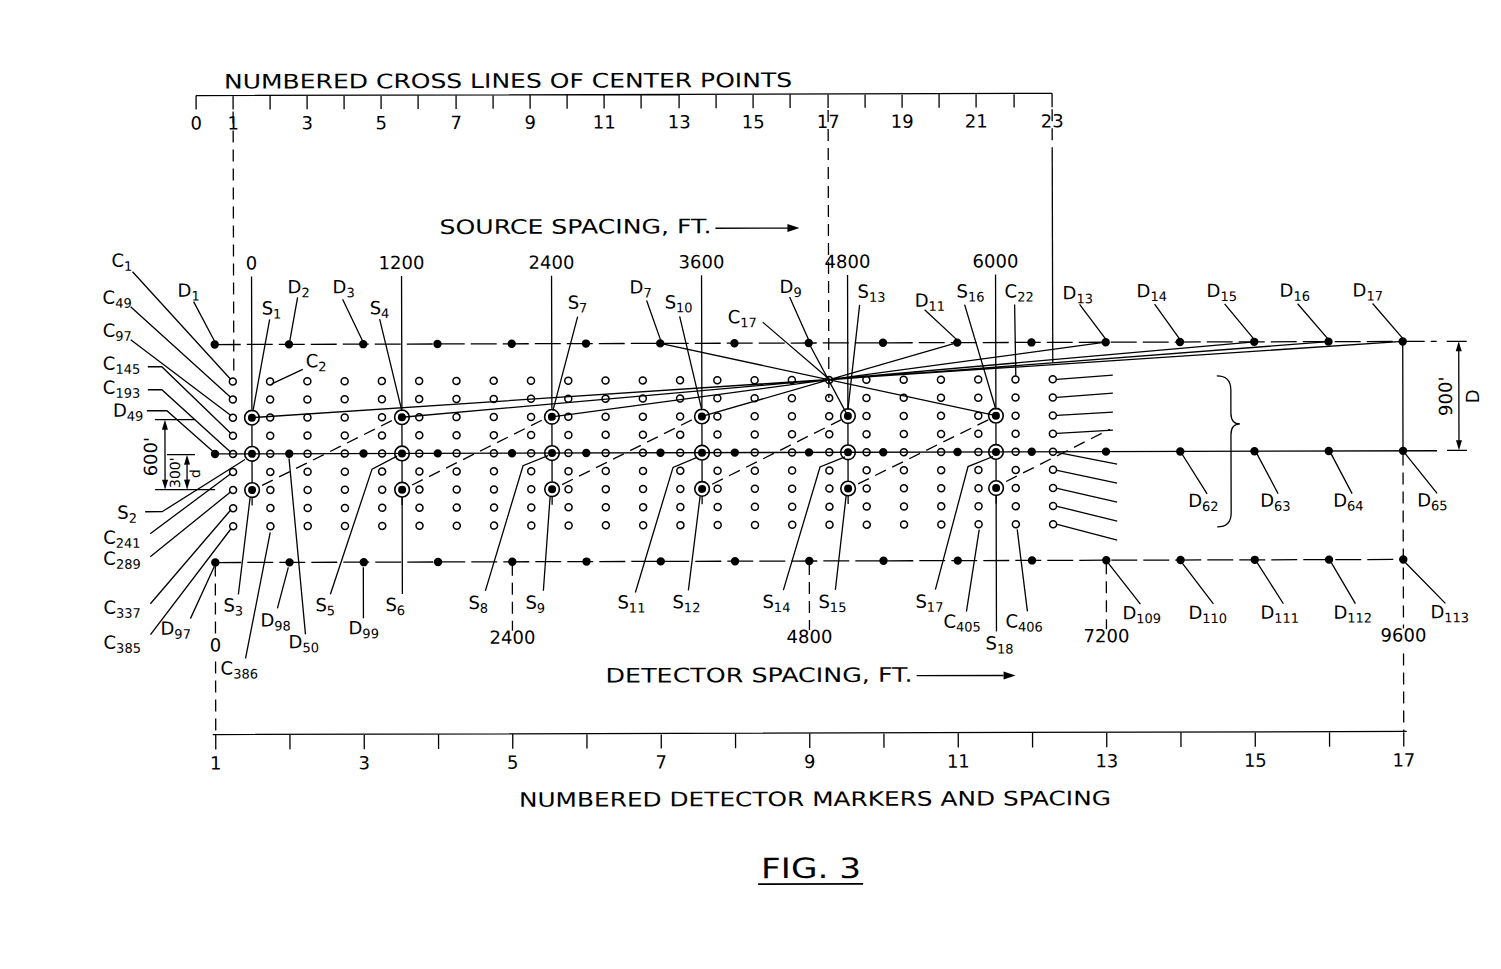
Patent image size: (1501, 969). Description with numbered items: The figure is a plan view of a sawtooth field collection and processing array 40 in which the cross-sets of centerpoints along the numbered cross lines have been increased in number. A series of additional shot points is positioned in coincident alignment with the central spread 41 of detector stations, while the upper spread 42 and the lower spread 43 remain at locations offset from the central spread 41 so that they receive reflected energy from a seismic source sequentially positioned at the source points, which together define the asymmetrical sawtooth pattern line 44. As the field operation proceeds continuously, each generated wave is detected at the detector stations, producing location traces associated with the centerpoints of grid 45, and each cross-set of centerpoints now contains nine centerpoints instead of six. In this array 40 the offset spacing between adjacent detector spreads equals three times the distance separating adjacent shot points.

The array 40 is at (1306, 216).
The central spread 41 is at (1303, 448).
The spread 42 is at (1293, 340).
The spread 43 is at (1212, 562).
The asymmetrical sawtooth pattern line 44 is at (1039, 480).
The grid 45 is at (1240, 425).